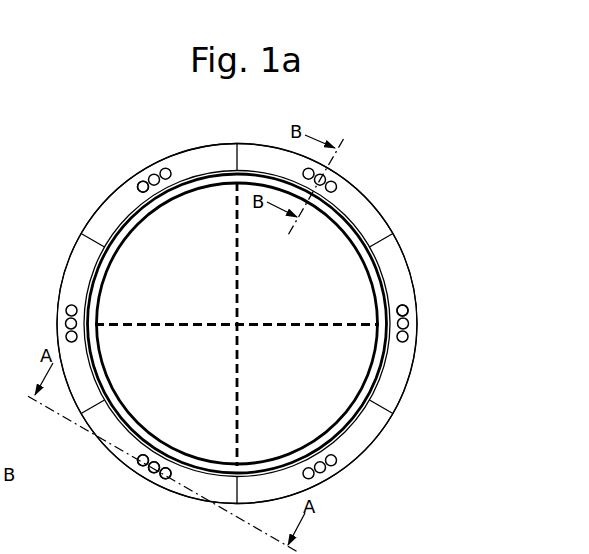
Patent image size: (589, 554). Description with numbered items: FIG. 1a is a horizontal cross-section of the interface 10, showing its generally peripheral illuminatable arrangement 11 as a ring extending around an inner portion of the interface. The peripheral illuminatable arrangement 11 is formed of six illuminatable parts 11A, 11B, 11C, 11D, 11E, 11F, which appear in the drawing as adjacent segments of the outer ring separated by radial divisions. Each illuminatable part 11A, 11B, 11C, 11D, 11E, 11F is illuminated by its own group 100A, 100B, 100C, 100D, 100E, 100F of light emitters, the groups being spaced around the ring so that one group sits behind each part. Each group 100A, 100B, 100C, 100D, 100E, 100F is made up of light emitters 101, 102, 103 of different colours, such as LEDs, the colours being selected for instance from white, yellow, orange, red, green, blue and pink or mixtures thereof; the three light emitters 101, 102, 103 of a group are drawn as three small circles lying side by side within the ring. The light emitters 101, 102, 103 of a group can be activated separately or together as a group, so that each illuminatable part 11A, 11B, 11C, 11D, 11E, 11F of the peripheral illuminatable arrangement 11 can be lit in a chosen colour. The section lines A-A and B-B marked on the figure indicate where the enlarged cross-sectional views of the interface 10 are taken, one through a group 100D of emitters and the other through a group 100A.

The illumination device 10 is at (168, 130).
The peripheral illuminatable arrangement 11 is at (335, 178).
The illuminatable part 11A is at (260, 155).
The illuminatable part 11B is at (400, 273).
The illuminatable part 11C is at (375, 420).
The illuminatable part 11D is at (207, 487).
The illuminatable part 11E is at (90, 390).
The illuminatable part 11F is at (208, 157).
The group of light emitters 100A is at (342, 192).
The group of light emitters 100B is at (402, 346).
The group of light emitters 100C is at (342, 458).
The group of light emitters 100D is at (143, 475).
The group of light emitters 100E is at (73, 295).
The group of light emitters 100F is at (130, 191).
The light emitter 101 is at (142, 455).
The light emitter 102 is at (155, 462).
The light emitter 103 is at (167, 470).